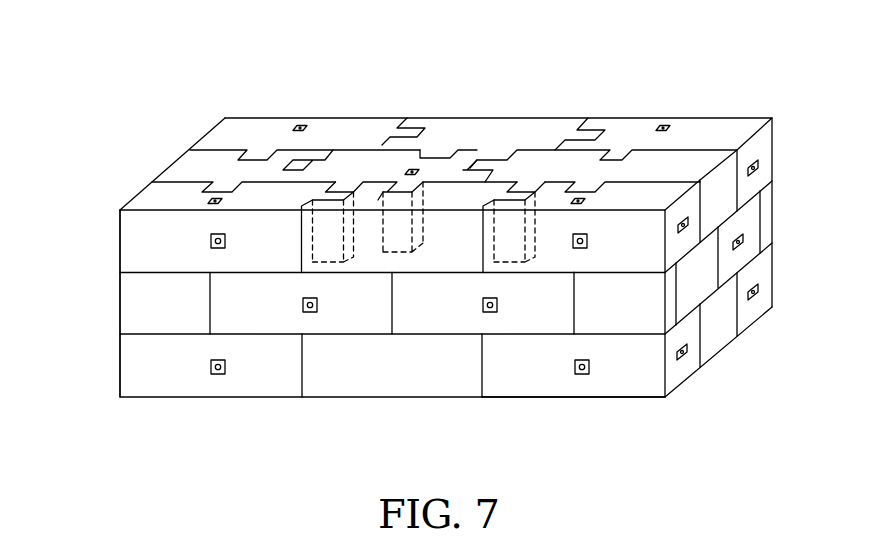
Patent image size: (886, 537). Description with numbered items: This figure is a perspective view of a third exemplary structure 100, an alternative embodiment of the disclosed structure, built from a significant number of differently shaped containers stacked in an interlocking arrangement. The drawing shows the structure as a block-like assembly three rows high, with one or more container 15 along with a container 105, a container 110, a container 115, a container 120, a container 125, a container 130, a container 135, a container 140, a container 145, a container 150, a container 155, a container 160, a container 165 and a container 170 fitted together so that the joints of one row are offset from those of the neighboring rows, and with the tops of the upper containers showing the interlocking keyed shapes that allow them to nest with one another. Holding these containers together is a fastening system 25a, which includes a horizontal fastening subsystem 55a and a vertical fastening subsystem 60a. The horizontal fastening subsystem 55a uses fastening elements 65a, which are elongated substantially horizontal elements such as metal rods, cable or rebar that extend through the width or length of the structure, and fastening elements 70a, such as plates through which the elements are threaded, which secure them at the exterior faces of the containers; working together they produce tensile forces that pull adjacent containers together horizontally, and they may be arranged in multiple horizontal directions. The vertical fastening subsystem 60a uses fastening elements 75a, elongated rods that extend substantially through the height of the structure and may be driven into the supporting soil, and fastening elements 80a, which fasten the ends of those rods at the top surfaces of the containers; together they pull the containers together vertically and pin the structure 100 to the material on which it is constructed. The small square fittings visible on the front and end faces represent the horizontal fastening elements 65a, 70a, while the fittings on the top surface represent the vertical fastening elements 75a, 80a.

The structure 100 is at (500, 74).
The vertical fastening subsystem 60a is at (648, 80).
The container 105 is at (238, 135).
The fastening elements 75a is at (300, 127).
The fastening elements 80a is at (304, 129).
The container 15 is at (413, 158).
The container 110 is at (527, 126).
The container 115 is at (646, 126).
The fastening elements 65a is at (684, 226).
The fastening elements 70a is at (686, 228).
The container 125 is at (728, 177).
The container 170 is at (766, 224).
The container 165 is at (725, 268).
The container 120 is at (187, 172).
The fastening system 25a is at (41, 250).
The container 130 is at (132, 255).
The horizontal fastening subsystem 55a is at (102, 296).
The container 145 is at (132, 313).
The container 150 is at (335, 313).
The container 135 is at (453, 203).
The container 155 is at (500, 318).
The container 140 is at (612, 378).
The container 160 is at (623, 310).